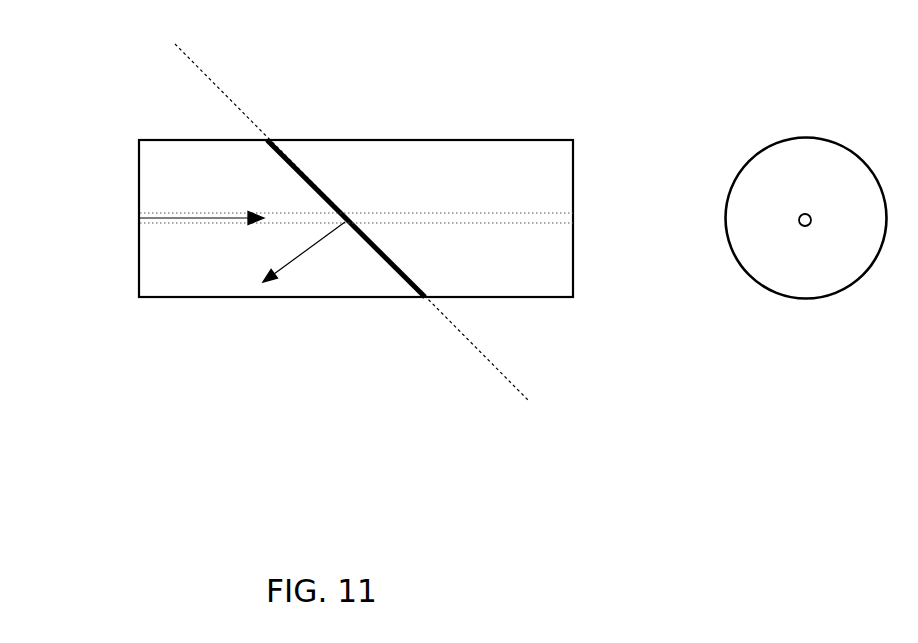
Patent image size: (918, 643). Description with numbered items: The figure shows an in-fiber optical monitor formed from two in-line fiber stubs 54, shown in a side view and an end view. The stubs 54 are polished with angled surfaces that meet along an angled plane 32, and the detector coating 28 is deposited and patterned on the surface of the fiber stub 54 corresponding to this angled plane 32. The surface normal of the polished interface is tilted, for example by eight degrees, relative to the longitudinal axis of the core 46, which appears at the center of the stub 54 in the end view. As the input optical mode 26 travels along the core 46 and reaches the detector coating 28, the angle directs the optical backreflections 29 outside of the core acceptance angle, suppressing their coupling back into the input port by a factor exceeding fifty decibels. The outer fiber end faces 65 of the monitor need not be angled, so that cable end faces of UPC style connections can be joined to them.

The input optical mode 26 is at (356, 205).
The detector coating 28 is at (312, 173).
The optical backreflections 29 is at (286, 254).
The angled plane 32 is at (370, 238).
The core 46 is at (801, 226).
The fiber stub 54 is at (385, 173).
The fiber end faces 65 is at (135, 193).